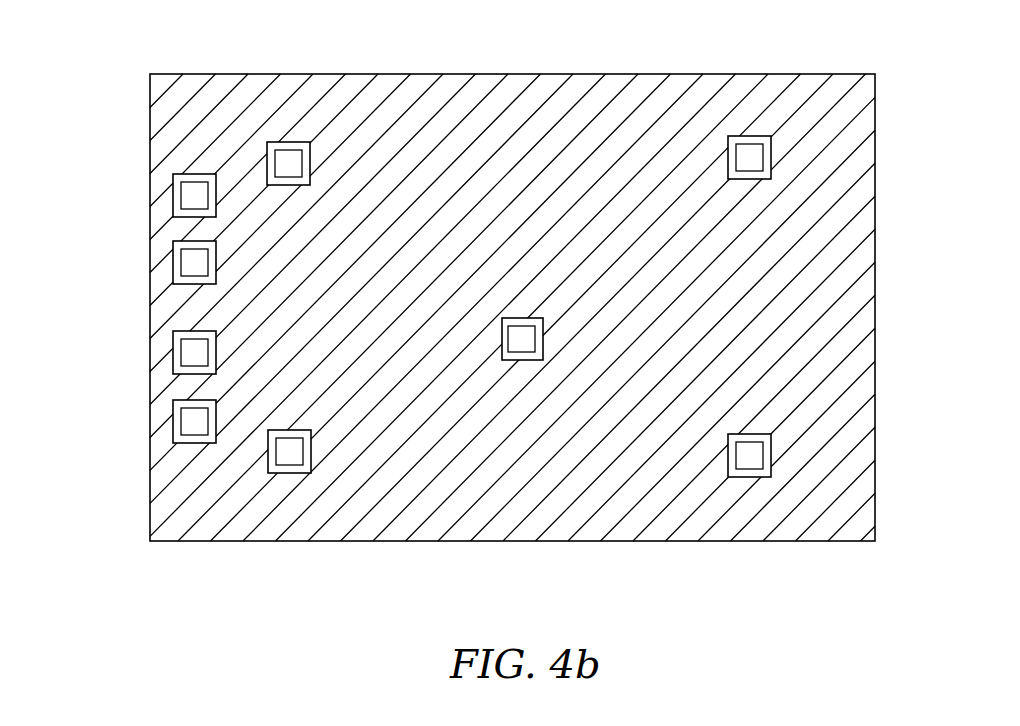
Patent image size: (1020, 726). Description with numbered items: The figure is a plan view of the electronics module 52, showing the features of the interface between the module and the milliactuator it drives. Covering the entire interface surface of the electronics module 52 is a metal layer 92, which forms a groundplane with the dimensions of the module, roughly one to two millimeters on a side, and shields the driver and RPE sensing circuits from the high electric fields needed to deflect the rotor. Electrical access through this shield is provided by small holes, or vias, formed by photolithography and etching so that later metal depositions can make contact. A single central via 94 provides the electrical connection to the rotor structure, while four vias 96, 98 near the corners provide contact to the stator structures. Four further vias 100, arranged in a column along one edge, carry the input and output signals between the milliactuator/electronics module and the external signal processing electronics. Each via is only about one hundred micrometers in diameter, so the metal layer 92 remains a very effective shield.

The electronics module 52 is at (728, 578).
The metal layer 92 is at (875, 183).
The via 94 is at (545, 341).
The vias 96 is at (771, 155).
The vias 98 is at (296, 142).
The vias 100 is at (173, 404).